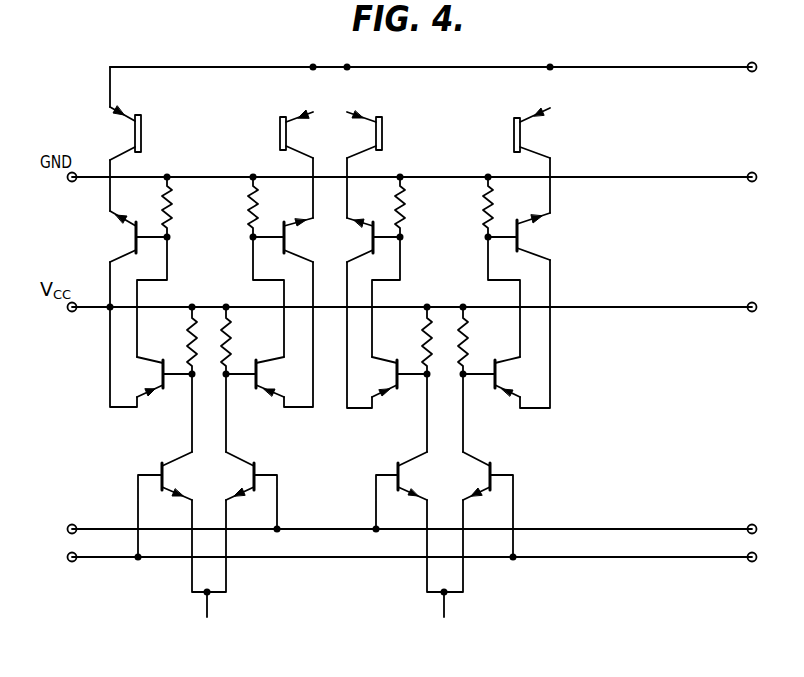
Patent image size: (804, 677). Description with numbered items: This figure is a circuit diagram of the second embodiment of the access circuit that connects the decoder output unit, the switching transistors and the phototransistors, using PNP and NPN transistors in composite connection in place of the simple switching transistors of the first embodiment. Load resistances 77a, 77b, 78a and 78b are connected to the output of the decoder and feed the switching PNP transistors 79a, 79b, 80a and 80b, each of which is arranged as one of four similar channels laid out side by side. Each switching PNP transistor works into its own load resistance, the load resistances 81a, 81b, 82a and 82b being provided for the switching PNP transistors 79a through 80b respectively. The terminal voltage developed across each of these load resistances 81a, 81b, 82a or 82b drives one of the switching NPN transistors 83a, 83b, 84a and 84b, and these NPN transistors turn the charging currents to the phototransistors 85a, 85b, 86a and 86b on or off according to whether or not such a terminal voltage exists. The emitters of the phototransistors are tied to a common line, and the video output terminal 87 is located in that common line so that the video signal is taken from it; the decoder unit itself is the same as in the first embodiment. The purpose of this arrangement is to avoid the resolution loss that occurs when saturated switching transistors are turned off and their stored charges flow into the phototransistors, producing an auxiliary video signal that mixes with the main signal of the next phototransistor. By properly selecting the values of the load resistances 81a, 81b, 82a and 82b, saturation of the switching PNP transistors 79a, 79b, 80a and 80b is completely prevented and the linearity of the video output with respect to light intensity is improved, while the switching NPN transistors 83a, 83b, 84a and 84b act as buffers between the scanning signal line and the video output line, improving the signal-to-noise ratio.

The load resistance 77a is at (185, 342).
The load resistance 77b is at (228, 322).
The load resistance 78a is at (420, 346).
The load resistance 78b is at (466, 348).
The switching PNP transistor 79a is at (140, 393).
The switching PNP transistor 79b is at (268, 396).
The switching PNP transistor 80a is at (378, 394).
The switching PNP transistor 80b is at (513, 391).
The load resistance 81a is at (162, 206).
The load resistance 81b is at (248, 202).
The load resistance 82a is at (405, 208).
The load resistance 82b is at (482, 208).
The switching NPN transistor 83a is at (132, 250).
The switching NPN transistor 83b is at (292, 224).
The switching NPN transistor 84a is at (364, 228).
The switching NPN transistor 84b is at (530, 228).
The phototransistor 85a is at (142, 132).
The phototransistor 85b is at (280, 137).
The phototransistor 86a is at (382, 137).
The phototransistor 86b is at (516, 118).
The video output terminal 87 is at (595, 66).